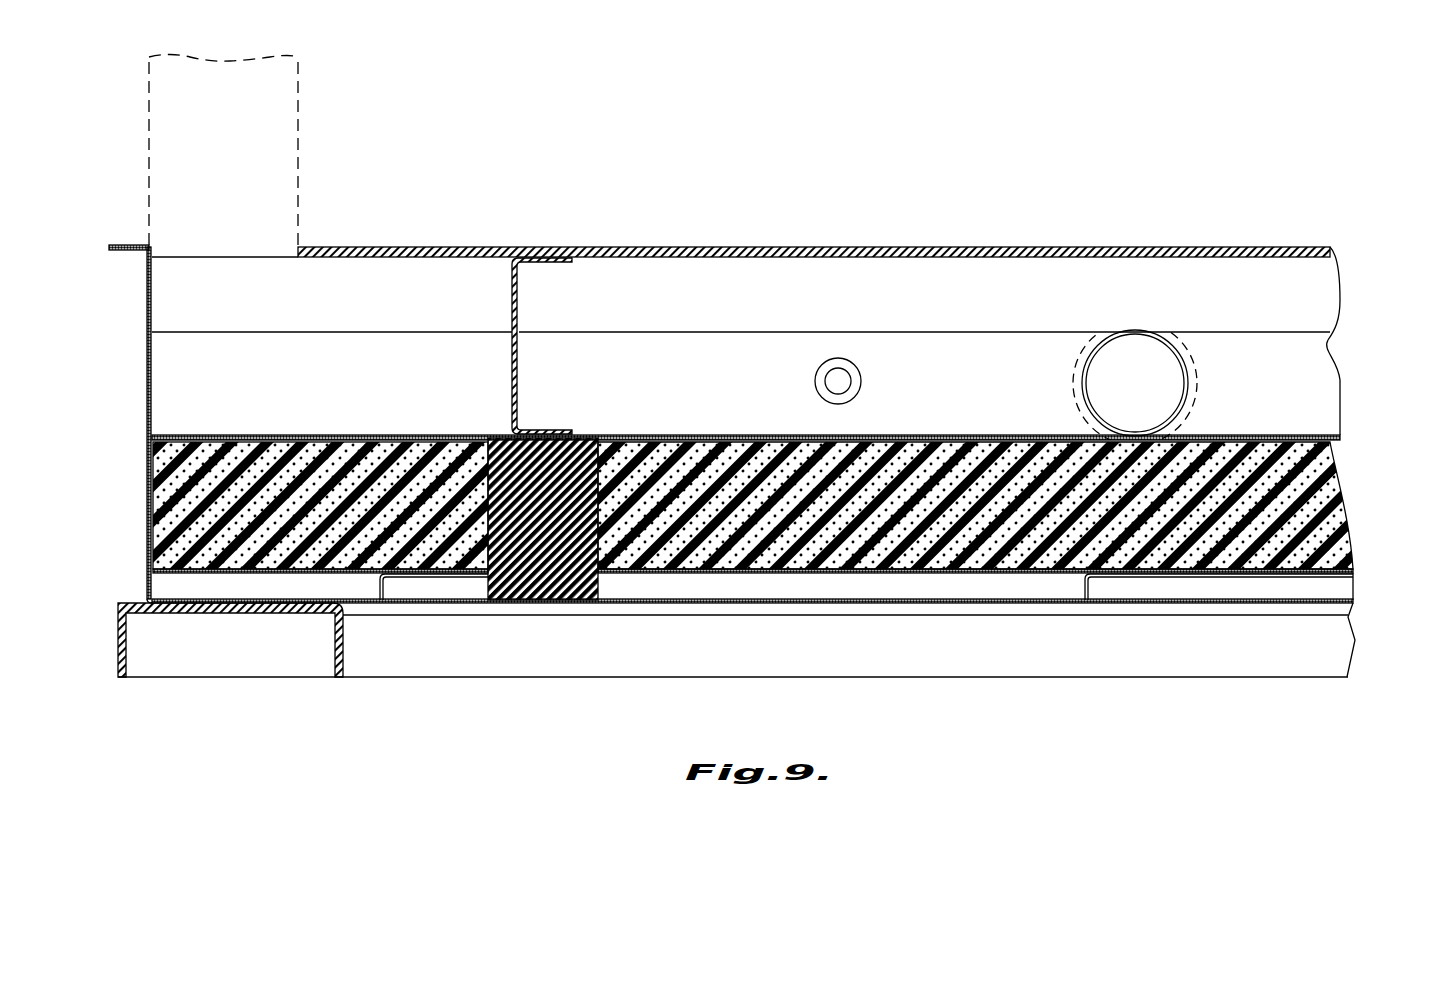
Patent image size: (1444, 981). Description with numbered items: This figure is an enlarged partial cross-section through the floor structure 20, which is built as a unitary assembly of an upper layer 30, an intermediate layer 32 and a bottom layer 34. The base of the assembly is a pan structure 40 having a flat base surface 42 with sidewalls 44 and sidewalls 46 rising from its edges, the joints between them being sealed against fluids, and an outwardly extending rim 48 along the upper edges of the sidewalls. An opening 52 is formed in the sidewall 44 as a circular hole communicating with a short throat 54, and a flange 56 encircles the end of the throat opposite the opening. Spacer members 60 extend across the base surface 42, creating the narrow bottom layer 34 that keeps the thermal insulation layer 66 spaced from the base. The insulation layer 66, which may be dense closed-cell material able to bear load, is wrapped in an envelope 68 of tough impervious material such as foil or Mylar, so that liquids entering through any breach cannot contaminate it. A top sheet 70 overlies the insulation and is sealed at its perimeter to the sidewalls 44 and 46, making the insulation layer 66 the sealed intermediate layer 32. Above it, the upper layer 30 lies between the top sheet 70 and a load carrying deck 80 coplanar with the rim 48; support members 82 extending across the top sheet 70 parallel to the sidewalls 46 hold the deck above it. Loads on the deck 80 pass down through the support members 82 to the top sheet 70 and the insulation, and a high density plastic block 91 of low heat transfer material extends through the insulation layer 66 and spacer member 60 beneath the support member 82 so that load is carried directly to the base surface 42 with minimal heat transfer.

The floor structure 20 is at (130, 550).
The upper layer 30 is at (1340, 290).
The intermediate layer 32 is at (1353, 523).
The bottom layer 34 is at (1355, 591).
The pan structure 40 is at (142, 503).
The base surface 42 is at (643, 604).
The sidewalls 44 is at (1330, 379).
The sidewalls 46 is at (142, 392).
The rim 48 is at (130, 244).
The opening 52 is at (1180, 383).
The throat 54 is at (1178, 357).
The flange 56 is at (1081, 348).
The spacer member 60 is at (380, 592).
The thermal insulation layer 66 is at (905, 575).
The envelope 68 is at (267, 574).
The top sheet 70 is at (933, 436).
The load carrying deck 80 is at (378, 247).
The support member 82 is at (512, 283).
The block 91 is at (545, 601).